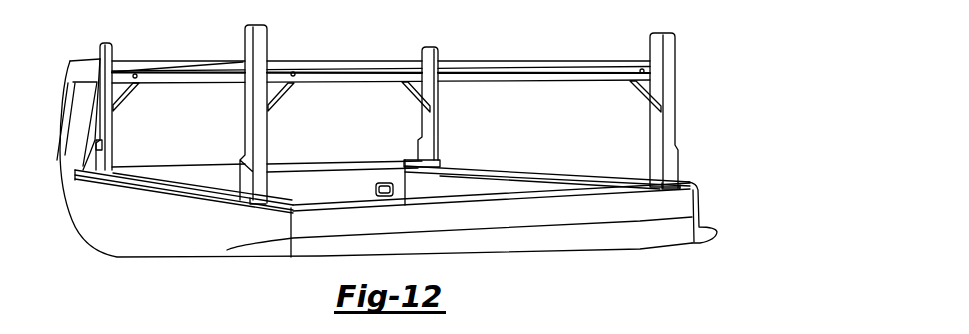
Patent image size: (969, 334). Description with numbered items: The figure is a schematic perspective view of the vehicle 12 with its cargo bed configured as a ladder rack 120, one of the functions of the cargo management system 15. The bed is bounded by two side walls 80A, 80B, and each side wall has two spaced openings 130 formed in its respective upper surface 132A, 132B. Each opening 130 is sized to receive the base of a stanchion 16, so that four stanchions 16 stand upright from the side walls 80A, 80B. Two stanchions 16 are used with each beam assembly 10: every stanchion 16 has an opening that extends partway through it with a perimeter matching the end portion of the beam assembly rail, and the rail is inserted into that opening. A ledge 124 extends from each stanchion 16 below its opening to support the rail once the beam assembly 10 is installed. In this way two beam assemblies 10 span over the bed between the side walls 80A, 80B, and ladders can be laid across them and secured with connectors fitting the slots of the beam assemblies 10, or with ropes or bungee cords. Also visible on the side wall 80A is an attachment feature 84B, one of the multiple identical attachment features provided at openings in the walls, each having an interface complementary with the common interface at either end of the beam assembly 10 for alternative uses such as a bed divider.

The beam assembly 10 is at (207, 61).
The vehicle 12 is at (62, 236).
The cargo management system 15 is at (712, 56).
The stanchion 16 is at (100, 113).
The side wall 80A is at (208, 193).
The side wall 80B is at (593, 172).
The attachment feature 84B is at (391, 192).
The ladder rack 120 is at (583, 23).
The ledge 124 is at (118, 90).
The opening 130 is at (97, 168).
The upper surface 132A is at (180, 183).
The upper surface 132B is at (531, 162).